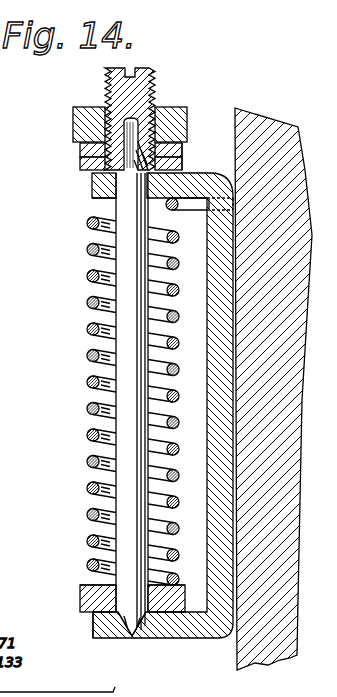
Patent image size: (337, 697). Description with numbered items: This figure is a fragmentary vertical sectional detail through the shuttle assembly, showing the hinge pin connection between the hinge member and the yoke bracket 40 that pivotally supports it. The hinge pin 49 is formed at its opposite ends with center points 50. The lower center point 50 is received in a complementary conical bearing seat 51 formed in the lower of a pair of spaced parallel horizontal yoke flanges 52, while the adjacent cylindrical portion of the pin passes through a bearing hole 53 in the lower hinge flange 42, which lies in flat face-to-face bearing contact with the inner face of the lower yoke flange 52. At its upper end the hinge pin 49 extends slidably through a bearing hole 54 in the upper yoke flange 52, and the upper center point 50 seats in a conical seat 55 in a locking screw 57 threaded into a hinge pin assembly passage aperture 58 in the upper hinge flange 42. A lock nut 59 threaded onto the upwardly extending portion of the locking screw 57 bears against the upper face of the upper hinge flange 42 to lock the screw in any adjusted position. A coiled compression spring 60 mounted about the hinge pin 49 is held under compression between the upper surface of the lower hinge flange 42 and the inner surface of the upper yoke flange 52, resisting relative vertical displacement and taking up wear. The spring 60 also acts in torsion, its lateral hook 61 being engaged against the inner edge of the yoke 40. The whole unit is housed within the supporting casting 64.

The yoke bracket 40 is at (213, 482).
The hinge flange 42 is at (80, 163).
The hinge pin 49 is at (120, 348).
The center point 50 is at (168, 106).
The conical bearing seat 51 is at (110, 637).
The yoke flange 52 is at (92, 195).
The bearing hole 53 is at (80, 590).
The bearing hole 54 is at (92, 183).
The conical seat 55 is at (183, 157).
The locking screw 57 is at (107, 84).
The hinge pin assembly passage aperture 58 is at (80, 152).
The lock nut 59 is at (73, 113).
The coiled compression spring 60 is at (88, 278).
The lateral hook 61 is at (200, 211).
The supporting casting 64 is at (247, 648).